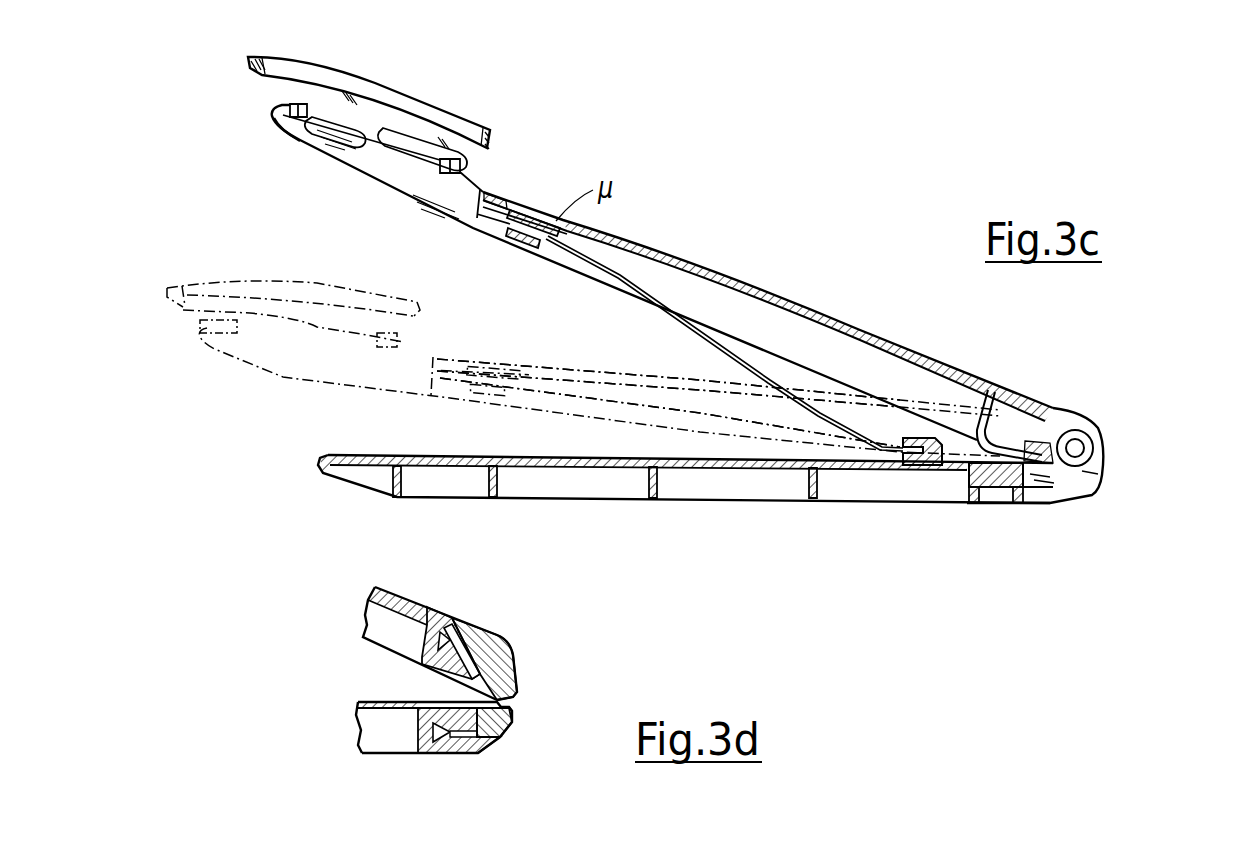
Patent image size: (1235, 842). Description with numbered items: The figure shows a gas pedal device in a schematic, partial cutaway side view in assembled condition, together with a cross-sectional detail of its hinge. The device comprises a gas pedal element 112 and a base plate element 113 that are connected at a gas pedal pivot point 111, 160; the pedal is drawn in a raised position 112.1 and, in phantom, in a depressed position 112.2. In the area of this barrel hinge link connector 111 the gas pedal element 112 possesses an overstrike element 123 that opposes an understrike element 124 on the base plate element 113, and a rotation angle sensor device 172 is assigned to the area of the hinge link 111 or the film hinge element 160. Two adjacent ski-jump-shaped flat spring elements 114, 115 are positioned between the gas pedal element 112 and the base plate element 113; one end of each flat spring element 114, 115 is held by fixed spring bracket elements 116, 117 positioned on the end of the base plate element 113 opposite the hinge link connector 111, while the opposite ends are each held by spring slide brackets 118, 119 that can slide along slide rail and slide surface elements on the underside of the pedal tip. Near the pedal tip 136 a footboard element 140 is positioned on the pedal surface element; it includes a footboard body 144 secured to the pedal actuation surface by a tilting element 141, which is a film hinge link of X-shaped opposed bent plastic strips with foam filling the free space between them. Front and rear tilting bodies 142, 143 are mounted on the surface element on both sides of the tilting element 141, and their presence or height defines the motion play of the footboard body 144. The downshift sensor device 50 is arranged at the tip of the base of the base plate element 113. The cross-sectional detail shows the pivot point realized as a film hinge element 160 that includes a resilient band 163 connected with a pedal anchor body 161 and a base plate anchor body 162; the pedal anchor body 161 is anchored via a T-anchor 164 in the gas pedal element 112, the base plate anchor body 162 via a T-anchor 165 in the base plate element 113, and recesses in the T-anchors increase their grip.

In FIG. 3c, the downshift sensor device 50 is at (440, 480).
In FIG. 3c, the gas pedal pivot point 111 is at (1086, 460).
In FIG. 3c, the gas pedal element 112 is at (768, 306).
In FIG. 3d, the gas pedal element 112 is at (476, 688).
In FIG. 3c, the upper housing part open position 112.1 is at (790, 307).
In FIG. 3c, the upper housing part closed position 112.2 is at (540, 349).
In FIG. 3c, the base plate element 113 is at (685, 487).
In FIG. 3d, the base plate element 113 is at (409, 735).
In FIG. 3c, the ski-jump-shaped flat spring element 114 is at (671, 343).
In FIG. 3c, the ski-jump-shaped flat spring element 115 is at (547, 390).
In FIG. 3c, the fixed spring bracket element 116 is at (908, 487).
In FIG. 3c, the fixed spring bracket element 117 is at (912, 466).
In FIG. 3c, the spring slide bracket 118 is at (553, 185).
In FIG. 3c, the spring slide bracket 119 is at (512, 204).
In FIG. 3c, the overstrike element 123 is at (1023, 440).
In FIG. 3c, the understrike element 124 is at (1000, 477).
In FIG. 3c, the pedal tip 136 is at (305, 140).
In FIG. 3c, the footboard element 140 is at (369, 88).
In FIG. 3c, the tilting element 141 is at (568, 267).
In FIG. 3c, the front tilting body 142 is at (290, 100).
In FIG. 3c, the rear tilting body 143 is at (455, 173).
In FIG. 3c, the footboard body 144 is at (338, 67).
In FIG. 3c, the film hinge element 160 is at (1086, 460).
In FIG. 3d, the film hinge element 160 is at (505, 700).
In FIG. 3d, the pedal anchor body 161 is at (510, 643).
In FIG. 3d, the base plate anchor body 162 is at (480, 730).
In FIG. 3d, the resilient band 163 is at (544, 707).
In FIG. 3d, the T-anchor 164 is at (455, 625).
In FIG. 3d, the T-anchor 165 is at (437, 753).
In FIG. 3c, the rotation angle sensor device 172 is at (1087, 455).